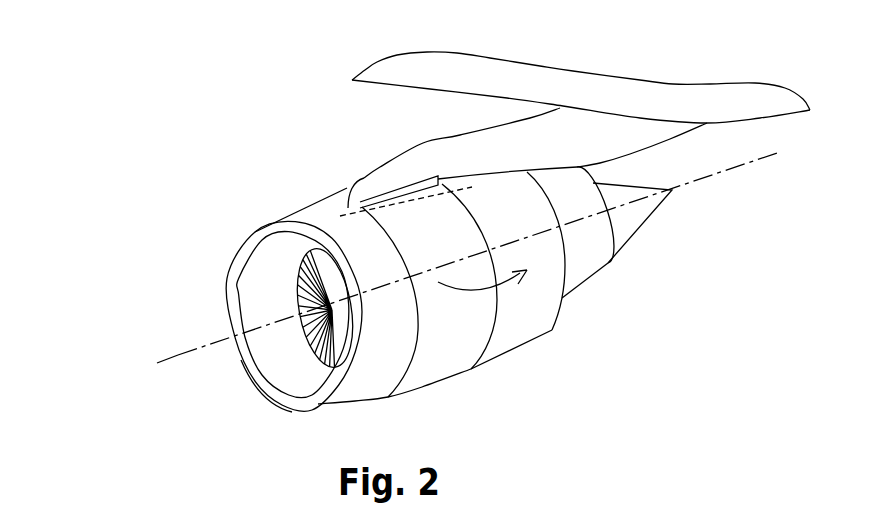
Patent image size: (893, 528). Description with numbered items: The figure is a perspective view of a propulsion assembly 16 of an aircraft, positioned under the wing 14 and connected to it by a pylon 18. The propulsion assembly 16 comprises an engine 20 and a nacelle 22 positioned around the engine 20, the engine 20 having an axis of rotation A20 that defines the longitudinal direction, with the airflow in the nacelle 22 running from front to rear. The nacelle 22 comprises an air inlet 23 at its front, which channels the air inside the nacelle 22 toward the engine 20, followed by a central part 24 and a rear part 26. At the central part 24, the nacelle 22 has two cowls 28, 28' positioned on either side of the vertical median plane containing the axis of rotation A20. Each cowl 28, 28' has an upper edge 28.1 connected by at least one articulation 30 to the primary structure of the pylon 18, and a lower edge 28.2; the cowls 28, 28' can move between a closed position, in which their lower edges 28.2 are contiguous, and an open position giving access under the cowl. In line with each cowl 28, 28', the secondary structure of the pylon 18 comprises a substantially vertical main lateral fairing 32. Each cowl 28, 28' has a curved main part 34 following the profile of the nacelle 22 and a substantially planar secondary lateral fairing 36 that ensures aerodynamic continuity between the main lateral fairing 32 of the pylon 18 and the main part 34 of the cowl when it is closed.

The wing 14 is at (680, 86).
The propulsion assembly 16 is at (232, 196).
The pylon 18 is at (466, 138).
The engine 20 is at (630, 266).
The nacelle 22 is at (303, 195).
The air inlet 23 is at (277, 416).
The central part 24 is at (468, 373).
The rear part 26 is at (555, 329).
The cowl 28 is at (535, 303).
The upper edge 28.1 is at (428, 184).
The lower edge 28.2 is at (413, 391).
The cowl 28' is at (297, 171).
The articulation 30 is at (405, 229).
The main lateral fairing 32 is at (385, 186).
The main part 34 is at (349, 228).
The secondary lateral fairing 36 is at (417, 186).
The axis of rotation A20 is at (178, 355).